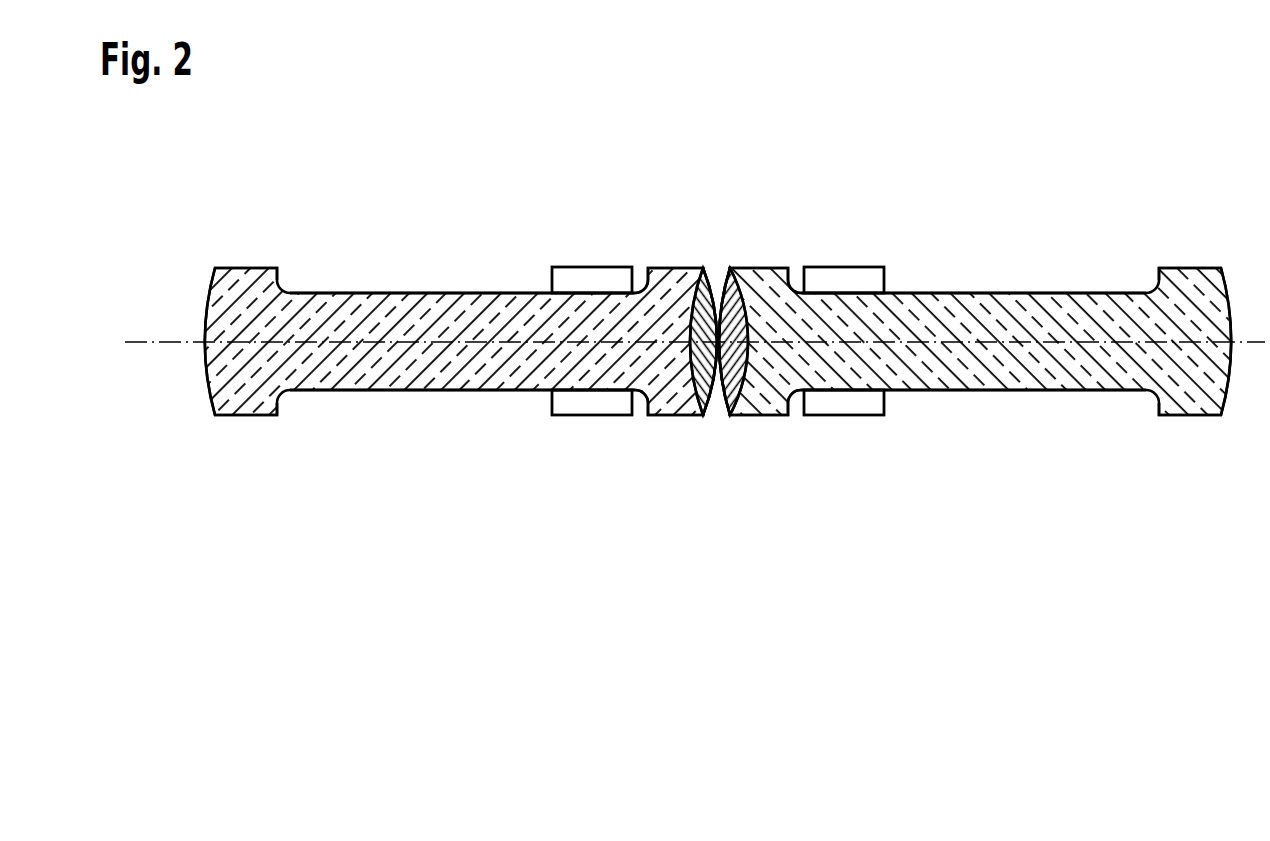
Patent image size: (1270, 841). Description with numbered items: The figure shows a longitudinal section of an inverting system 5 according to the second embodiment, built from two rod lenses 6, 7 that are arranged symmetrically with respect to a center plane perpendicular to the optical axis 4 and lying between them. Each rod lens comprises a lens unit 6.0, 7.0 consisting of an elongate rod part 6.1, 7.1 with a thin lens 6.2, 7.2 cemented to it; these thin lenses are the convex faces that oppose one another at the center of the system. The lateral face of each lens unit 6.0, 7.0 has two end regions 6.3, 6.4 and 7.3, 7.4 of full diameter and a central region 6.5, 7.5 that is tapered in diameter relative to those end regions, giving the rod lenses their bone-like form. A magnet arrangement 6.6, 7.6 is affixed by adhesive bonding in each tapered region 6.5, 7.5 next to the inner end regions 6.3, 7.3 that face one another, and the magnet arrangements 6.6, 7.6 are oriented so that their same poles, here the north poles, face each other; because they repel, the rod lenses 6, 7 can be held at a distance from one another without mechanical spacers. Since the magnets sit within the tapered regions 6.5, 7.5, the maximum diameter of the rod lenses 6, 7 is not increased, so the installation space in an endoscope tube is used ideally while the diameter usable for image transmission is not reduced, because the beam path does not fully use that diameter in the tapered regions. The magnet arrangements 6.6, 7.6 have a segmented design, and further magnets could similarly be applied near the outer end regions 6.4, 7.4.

The optical axis 4 is at (166, 343).
The inverting system 5 is at (710, 132).
The rod lens 6 is at (461, 337).
The lens unit 6.0 is at (474, 266).
The elongate rod part 6.1 is at (348, 375).
The thin lens 6.2 is at (694, 270).
The end region 6.3 is at (688, 415).
The end region 6.4 is at (247, 415).
The central region 6.5 is at (413, 390).
The magnet arrangement 6.6 is at (594, 440).
The rod lens 7 is at (975, 336).
The lens unit 7.0 is at (958, 266).
The elongate rod part 7.1 is at (1092, 375).
The thin lens 7.2 is at (738, 270).
The end region 7.3 is at (745, 415).
The end region 7.4 is at (1180, 415).
The central region 7.5 is at (1020, 390).
The magnet arrangement 7.6 is at (843, 440).